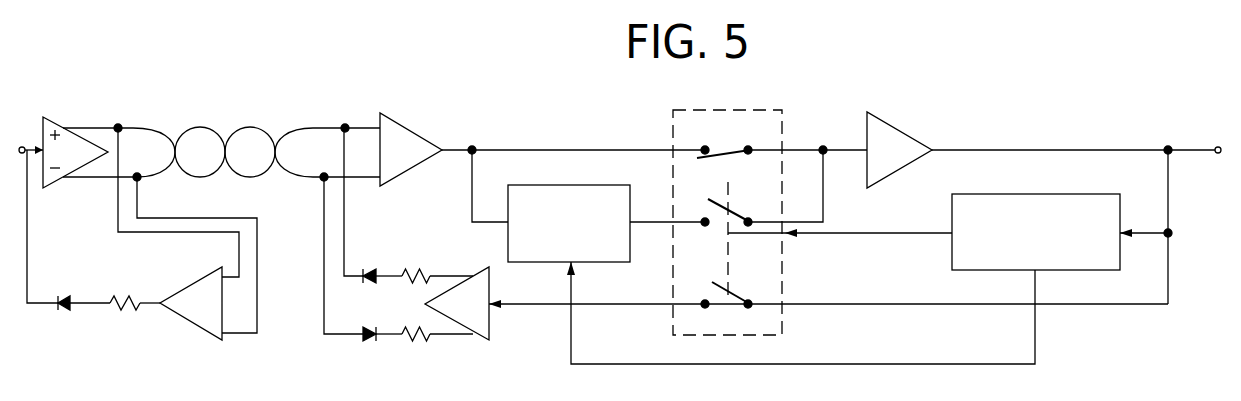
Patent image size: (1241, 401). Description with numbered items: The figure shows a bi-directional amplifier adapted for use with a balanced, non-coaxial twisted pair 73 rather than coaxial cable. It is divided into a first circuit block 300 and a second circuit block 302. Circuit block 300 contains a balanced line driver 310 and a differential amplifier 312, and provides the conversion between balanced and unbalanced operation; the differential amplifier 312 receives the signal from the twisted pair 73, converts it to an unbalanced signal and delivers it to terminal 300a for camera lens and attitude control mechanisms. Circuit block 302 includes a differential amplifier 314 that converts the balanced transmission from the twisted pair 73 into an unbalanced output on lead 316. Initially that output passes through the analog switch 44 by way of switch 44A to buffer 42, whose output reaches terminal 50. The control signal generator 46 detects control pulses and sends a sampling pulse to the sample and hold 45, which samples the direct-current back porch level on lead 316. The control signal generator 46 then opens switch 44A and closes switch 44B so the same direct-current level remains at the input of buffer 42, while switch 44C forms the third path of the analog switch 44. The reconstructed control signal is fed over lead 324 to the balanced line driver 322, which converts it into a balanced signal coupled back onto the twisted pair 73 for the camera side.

The terminal 300a is at (27, 146).
The first circuit block 300 is at (211, 142).
The balanced line driver 310 is at (47, 184).
The twisted pair 73 is at (242, 120).
The differential amplifier 312 is at (183, 316).
The differential amplifier 314 is at (409, 100).
The lead 316 is at (497, 150).
The second circuit block 302 is at (573, 109).
The sample and hold 45 is at (563, 165).
The analog switch 44 is at (727, 206).
The switch 44A is at (731, 154).
The switch 44B is at (727, 198).
The switch 44C is at (720, 283).
The buffer 42 is at (906, 133).
The control signal generator 46 is at (1030, 194).
The terminal 50 is at (1218, 147).
The balanced line driver 322 is at (490, 326).
The lead 324 is at (598, 305).